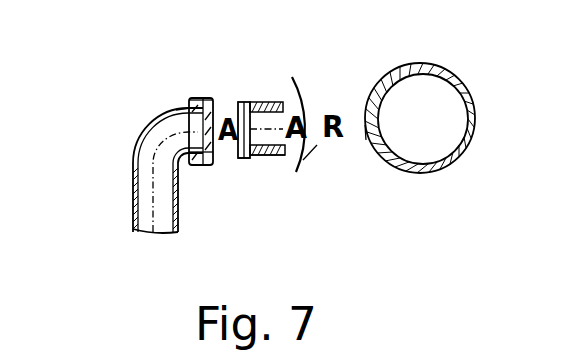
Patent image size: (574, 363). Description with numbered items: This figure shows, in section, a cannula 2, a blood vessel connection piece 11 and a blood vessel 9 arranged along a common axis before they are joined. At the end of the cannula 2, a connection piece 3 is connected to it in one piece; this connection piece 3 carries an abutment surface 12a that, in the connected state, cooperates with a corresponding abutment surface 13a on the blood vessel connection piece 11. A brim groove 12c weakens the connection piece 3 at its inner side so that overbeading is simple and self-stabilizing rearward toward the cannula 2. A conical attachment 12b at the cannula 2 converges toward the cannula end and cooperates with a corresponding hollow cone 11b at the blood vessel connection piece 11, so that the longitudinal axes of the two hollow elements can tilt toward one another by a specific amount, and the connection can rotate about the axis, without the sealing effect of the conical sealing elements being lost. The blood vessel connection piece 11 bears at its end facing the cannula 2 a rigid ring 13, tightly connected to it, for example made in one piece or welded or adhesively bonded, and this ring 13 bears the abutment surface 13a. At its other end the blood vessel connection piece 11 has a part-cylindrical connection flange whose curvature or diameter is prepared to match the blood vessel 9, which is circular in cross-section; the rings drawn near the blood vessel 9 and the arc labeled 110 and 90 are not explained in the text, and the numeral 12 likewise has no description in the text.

The cannula 2 is at (133, 143).
The pipe end flange 12 is at (200, 105).
The abutment surface 12a is at (203, 167).
The conical attachment 12b is at (185, 108).
The brim groove 12c is at (188, 108).
The connection piece 3 is at (215, 167).
The blood vessel connection piece 11 is at (267, 102).
The hollow cone 11b is at (240, 107).
The rigid ring 13 is at (247, 158).
The abutment surface 13a is at (258, 155).
The arc contour 110 is at (292, 92).
The blood vessel 9 is at (450, 72).
The ring wall 90 is at (365, 132).